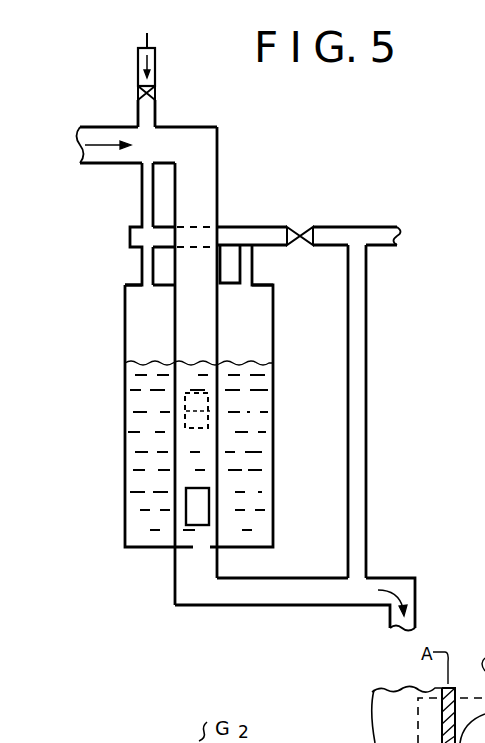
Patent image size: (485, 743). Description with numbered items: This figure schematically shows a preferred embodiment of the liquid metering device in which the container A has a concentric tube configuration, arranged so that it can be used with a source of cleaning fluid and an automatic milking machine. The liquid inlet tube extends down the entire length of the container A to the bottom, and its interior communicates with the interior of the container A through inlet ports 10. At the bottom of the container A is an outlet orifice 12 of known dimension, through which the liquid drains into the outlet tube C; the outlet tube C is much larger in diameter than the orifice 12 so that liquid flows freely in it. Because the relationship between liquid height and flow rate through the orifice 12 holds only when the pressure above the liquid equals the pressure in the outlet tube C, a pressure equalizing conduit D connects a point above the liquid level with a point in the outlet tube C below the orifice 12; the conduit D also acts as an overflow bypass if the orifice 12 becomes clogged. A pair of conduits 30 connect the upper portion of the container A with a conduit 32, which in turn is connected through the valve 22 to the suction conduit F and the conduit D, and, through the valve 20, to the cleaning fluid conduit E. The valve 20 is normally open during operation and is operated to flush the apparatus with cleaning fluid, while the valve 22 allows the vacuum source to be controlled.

The inlet port 10 is at (195, 411).
The outlet orifice 12 is at (197, 553).
The valve 20 is at (153, 98).
The valve 22 is at (302, 230).
The conduit 30 is at (142, 263).
The conduit 32 is at (244, 227).
The container A is at (117, 128).
The outlet tube C is at (387, 620).
The pressure equalizing conduit D is at (368, 428).
The cleaning fluid conduit E is at (159, 53).
The suction conduit F is at (380, 229).